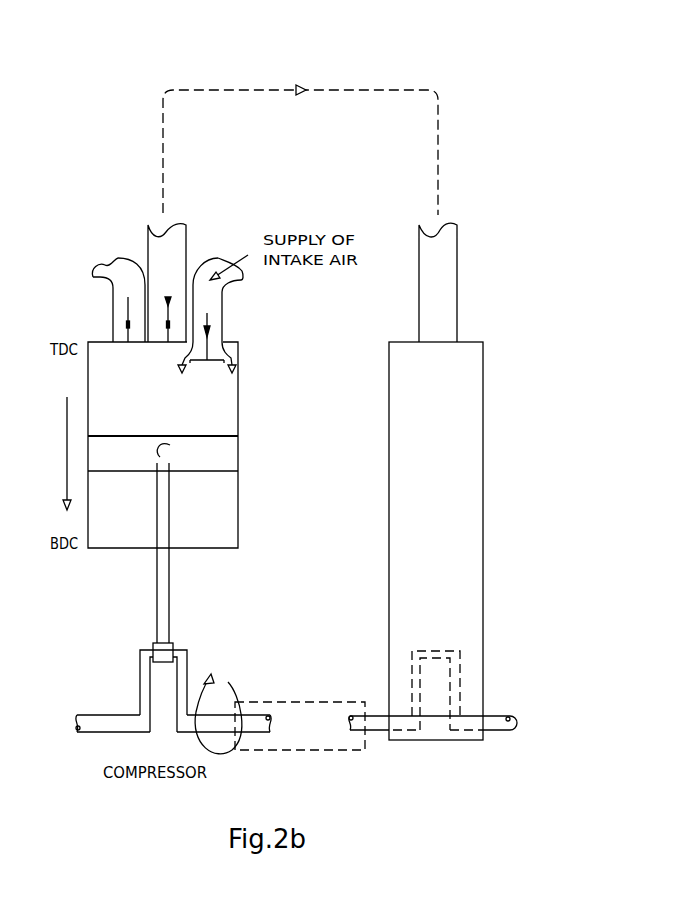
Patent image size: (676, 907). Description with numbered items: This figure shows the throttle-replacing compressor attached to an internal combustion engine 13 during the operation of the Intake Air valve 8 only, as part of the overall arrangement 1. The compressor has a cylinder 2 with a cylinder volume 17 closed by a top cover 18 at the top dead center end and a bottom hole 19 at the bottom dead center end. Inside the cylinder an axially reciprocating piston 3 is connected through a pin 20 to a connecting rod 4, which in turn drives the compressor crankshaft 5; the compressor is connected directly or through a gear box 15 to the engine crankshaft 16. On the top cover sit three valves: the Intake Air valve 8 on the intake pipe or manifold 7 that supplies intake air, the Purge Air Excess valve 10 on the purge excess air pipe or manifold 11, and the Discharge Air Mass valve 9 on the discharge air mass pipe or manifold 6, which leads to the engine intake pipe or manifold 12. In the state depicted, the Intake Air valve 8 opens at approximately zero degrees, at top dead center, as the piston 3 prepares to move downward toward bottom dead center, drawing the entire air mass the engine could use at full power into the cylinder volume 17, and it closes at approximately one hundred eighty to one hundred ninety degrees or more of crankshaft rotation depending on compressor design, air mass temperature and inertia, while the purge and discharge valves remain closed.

The compressed air supply line 1 is at (283, 53).
The cylinder 2 is at (238, 503).
The piston 3 is at (108, 435).
The connecting rod 4 is at (174, 605).
The crankshaft 5 is at (247, 717).
The discharge air mass pipe or manifold 6 is at (186, 224).
The intake pipe or manifold 7 is at (218, 258).
The Intake Air valve 8 is at (224, 292).
The Discharge Air Mass valve 9 is at (166, 299).
The Purge Air Excess valve 10 is at (128, 315).
The purge excess air pipe or manifold 11 is at (118, 258).
The intake pipe or manifold 12 is at (457, 255).
The internal combustion engine 13 is at (482, 462).
The gear box 15 is at (320, 702).
The engine crankshaft 16 is at (493, 716).
The cylinder volume 17 is at (222, 388).
The top cover 18 is at (228, 339).
The bottom hole 19 is at (127, 550).
The pin 20 is at (170, 445).